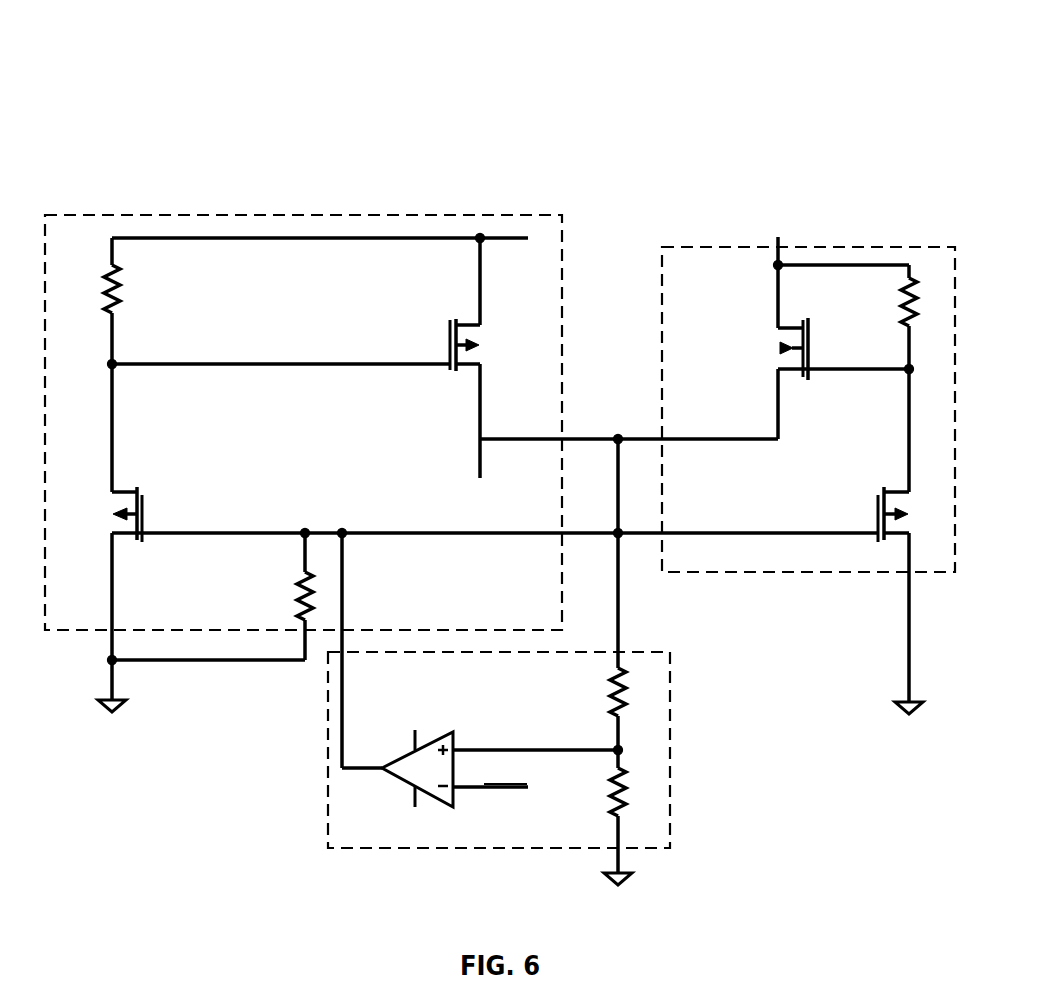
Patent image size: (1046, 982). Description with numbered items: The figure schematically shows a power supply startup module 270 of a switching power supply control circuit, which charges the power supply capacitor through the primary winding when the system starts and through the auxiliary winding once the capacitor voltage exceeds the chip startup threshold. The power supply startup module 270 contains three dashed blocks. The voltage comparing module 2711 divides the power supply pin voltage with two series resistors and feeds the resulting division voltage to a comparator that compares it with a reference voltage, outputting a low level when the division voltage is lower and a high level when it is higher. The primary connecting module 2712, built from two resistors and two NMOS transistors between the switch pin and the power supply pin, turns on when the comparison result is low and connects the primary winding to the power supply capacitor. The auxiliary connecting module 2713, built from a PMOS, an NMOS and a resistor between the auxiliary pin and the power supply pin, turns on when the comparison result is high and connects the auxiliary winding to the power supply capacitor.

The power supply startup module 270 is at (542, 32).
The voltage comparing module 2711 is at (688, 765).
The primary connecting module 2712 is at (274, 200).
The auxiliary connecting module 2713 is at (836, 235).